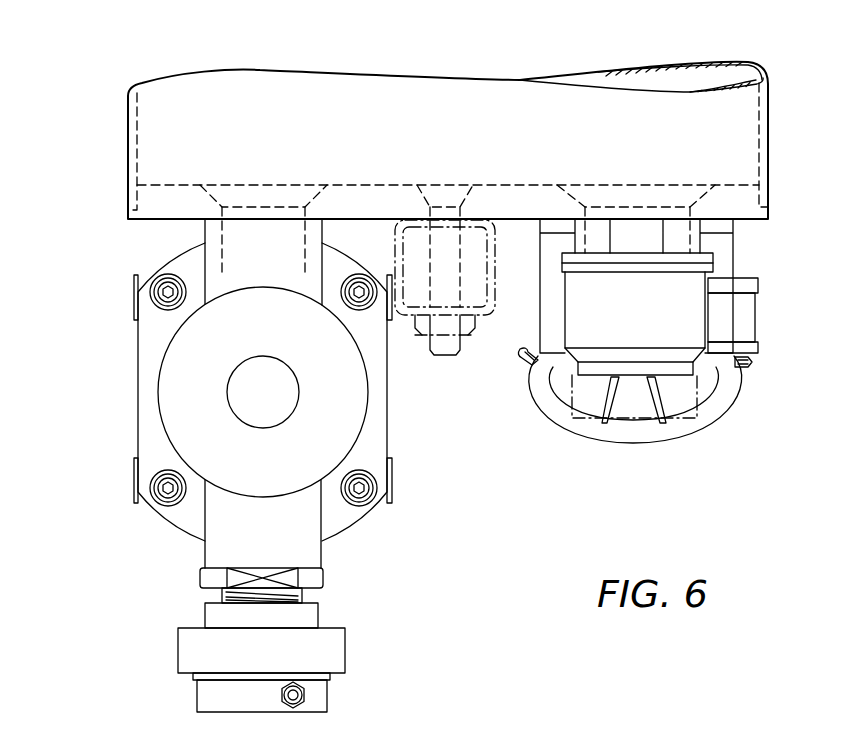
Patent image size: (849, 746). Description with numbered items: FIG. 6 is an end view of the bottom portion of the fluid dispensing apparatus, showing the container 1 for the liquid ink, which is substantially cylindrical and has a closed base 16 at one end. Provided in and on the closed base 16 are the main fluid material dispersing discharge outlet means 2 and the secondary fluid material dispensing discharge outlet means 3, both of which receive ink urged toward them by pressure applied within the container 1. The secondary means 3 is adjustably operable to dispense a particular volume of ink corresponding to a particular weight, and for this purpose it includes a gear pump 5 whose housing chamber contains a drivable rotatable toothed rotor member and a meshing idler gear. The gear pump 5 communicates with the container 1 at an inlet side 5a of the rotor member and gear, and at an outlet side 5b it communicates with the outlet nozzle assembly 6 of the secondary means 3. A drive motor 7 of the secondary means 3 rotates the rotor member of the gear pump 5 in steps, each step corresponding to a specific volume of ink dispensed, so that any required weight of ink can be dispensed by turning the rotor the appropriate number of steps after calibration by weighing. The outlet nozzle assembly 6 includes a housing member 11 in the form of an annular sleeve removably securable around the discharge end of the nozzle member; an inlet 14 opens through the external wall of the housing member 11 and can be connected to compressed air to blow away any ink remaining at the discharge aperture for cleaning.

The container 1 is at (768, 117).
The closed base 16 is at (160, 203).
The inlet side 5a is at (225, 237).
The gear pump 5 is at (150, 440).
The drive motor 7 is at (173, 365).
The secondary fluid material dispensing discharge outlet means 3 is at (124, 519).
The outlet side 5b is at (222, 540).
The outlet nozzle assembly 6 is at (164, 648).
The housing member 11 is at (212, 698).
The inlet 14 is at (307, 695).
The main fluid material dispersing discharge outlet means 2 is at (770, 314).